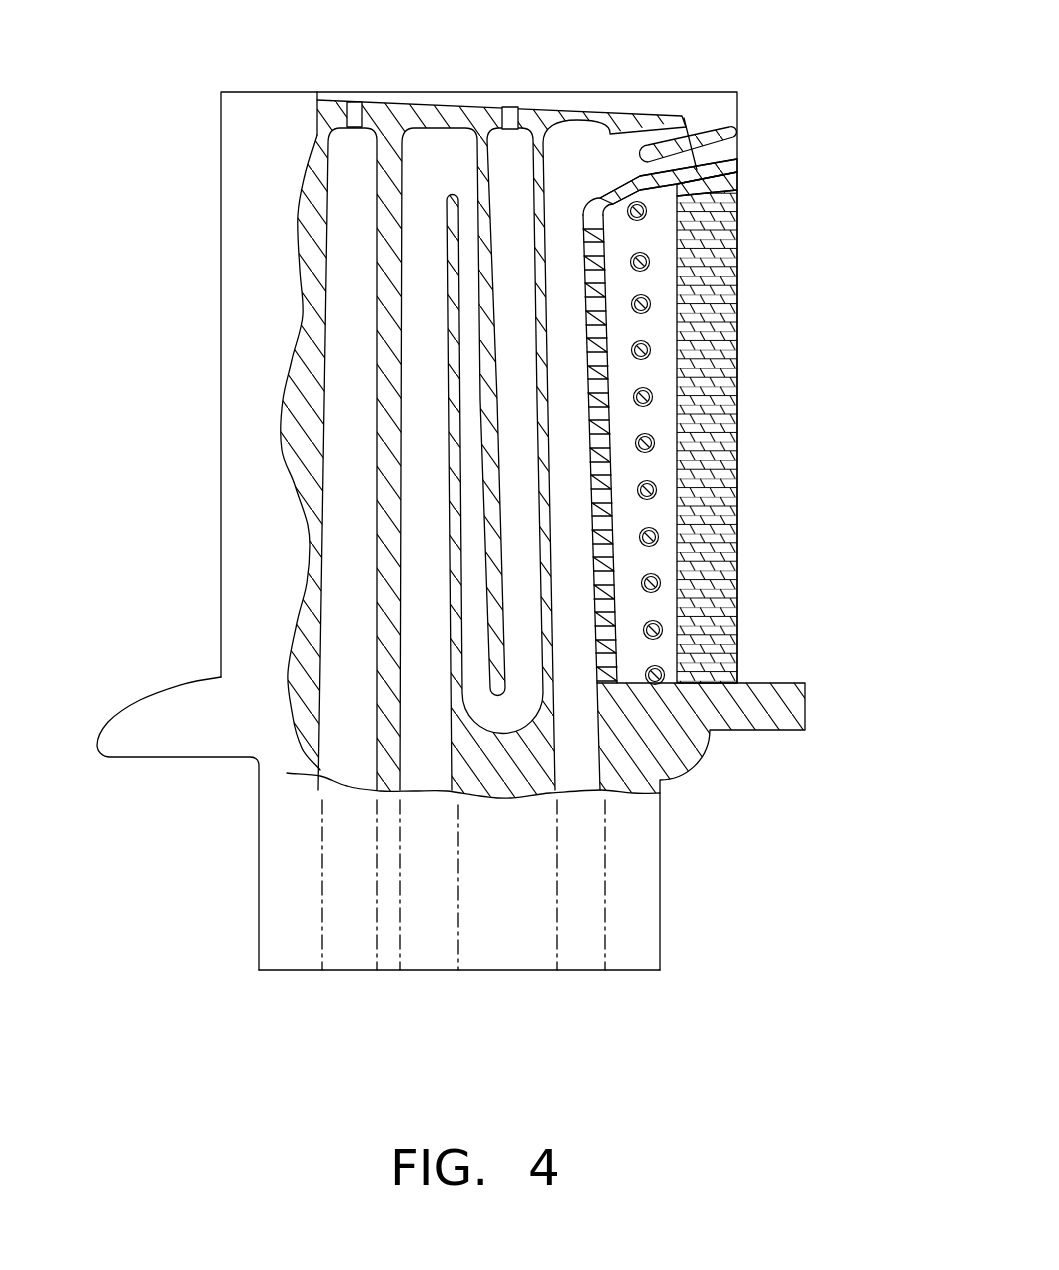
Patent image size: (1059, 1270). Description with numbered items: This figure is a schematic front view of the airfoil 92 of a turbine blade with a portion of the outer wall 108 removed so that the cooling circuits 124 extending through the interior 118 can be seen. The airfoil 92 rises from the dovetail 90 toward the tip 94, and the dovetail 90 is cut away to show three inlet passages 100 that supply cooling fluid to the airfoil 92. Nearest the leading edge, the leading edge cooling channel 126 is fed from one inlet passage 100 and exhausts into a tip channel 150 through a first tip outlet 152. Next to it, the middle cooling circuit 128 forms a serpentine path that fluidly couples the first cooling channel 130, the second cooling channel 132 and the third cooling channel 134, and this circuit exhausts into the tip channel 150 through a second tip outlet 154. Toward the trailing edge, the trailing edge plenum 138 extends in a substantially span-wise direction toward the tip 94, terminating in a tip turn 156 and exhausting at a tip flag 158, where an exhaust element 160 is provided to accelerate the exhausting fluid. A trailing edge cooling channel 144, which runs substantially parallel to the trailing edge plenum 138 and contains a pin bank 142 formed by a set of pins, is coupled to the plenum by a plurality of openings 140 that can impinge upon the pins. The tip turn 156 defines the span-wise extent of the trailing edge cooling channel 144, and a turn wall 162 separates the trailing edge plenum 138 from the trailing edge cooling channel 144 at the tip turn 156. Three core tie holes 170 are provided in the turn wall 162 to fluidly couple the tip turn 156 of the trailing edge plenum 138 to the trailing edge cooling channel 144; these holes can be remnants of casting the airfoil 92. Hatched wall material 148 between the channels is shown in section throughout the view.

The dovetail 90 is at (258, 878).
The airfoil 92 is at (127, 130).
The tip 94 is at (636, 91).
The inlet passage 100 is at (358, 972).
The outer wall 108 is at (307, 187).
The interior 118 is at (272, 410).
The cooling circuit 124 is at (338, 745).
The leading edge cooling channel 126 is at (352, 694).
The middle cooling circuit 128 is at (416, 148).
The first cooling channel 130 is at (432, 451).
The second cooling channel 132 is at (478, 474).
The third cooling channel 134 is at (522, 504).
The trailing edge plenum 138 is at (600, 790).
The openings 140 is at (607, 285).
The pin bank 142 is at (687, 412).
The trailing edge cooling channel 144 is at (647, 375).
The wall material 148 is at (538, 118).
The tip channel 150 is at (457, 85).
The first tip outlet 152 is at (353, 102).
The second tip outlet 154 is at (498, 117).
The tip turn 156 is at (576, 140).
The tip flag 158 is at (696, 110).
The exhaust element 160 is at (717, 133).
The turn wall 162 is at (690, 157).
The core tie holes 170 is at (620, 215).